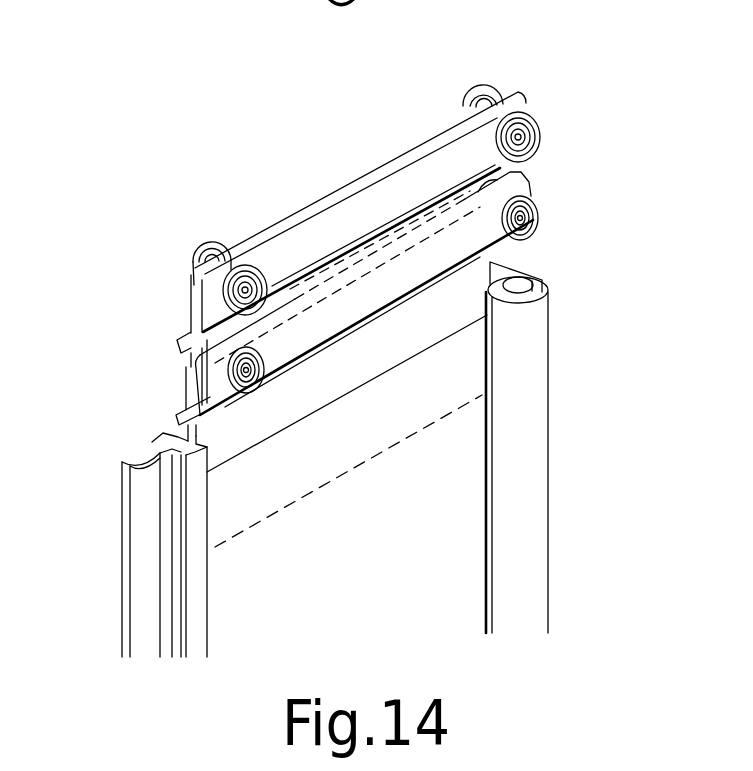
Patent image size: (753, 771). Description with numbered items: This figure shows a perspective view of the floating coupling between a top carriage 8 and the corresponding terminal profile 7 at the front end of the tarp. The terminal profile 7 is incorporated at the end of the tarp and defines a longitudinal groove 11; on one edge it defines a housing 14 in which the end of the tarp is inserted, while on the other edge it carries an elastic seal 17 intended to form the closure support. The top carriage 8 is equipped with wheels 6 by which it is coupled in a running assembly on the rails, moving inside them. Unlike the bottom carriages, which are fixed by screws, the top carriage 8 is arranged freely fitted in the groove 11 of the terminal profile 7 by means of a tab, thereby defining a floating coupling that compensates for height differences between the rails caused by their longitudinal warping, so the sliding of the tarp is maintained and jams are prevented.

The wheels 6 is at (517, 113).
The top carriages 8 is at (402, 270).
The housing 14 is at (516, 285).
The longitudinal groove 11 is at (478, 505).
The elastic seal 17 is at (143, 535).
The terminal profiles 7 is at (197, 600).